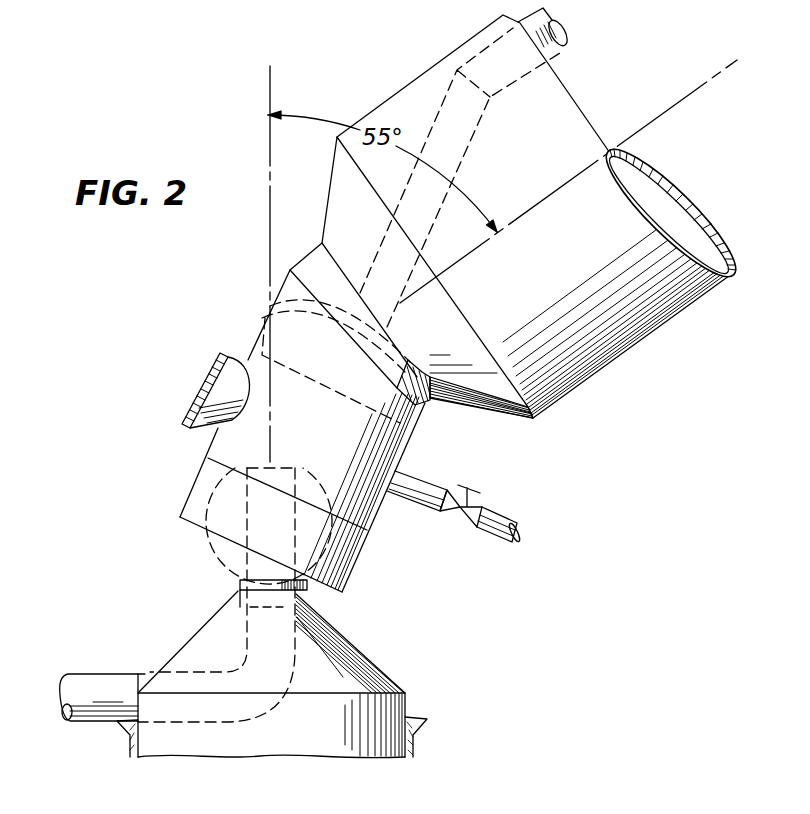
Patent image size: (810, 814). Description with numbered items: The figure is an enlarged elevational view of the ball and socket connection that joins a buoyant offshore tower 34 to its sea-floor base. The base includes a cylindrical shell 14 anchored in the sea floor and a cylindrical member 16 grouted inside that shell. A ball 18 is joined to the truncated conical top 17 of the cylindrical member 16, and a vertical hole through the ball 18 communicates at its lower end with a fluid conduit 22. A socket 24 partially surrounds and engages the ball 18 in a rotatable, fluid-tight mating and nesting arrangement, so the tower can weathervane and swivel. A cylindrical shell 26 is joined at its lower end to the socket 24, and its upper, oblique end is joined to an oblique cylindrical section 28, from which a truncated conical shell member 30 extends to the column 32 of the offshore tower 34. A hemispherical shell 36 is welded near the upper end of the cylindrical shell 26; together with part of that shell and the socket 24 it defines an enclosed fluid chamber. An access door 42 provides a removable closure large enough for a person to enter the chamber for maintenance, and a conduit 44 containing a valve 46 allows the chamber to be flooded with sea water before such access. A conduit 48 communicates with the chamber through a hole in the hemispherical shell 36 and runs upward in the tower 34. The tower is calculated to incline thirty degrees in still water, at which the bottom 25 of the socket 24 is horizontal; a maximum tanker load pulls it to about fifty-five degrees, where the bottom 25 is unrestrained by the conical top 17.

The cylindrical shell 14 is at (427, 725).
The cylindrical member 16 is at (407, 705).
The truncated conical top 17 is at (355, 642).
The ball 18 is at (230, 556).
The fluid conduit 22 is at (90, 680).
The socket 24 is at (195, 481).
The bottom of socket 25 is at (200, 531).
The cylindrical shell 26 is at (235, 447).
The oblique cylindrical section 28 is at (308, 265).
The truncated conical shell member 30 is at (474, 406).
The column 32 is at (617, 363).
The offshore tower 34 is at (720, 312).
The hemispherical shell 36 is at (270, 306).
The access door 42 is at (212, 374).
The conduit 44 is at (420, 505).
The valve 46 is at (482, 502).
The conduit 48 is at (572, 36).